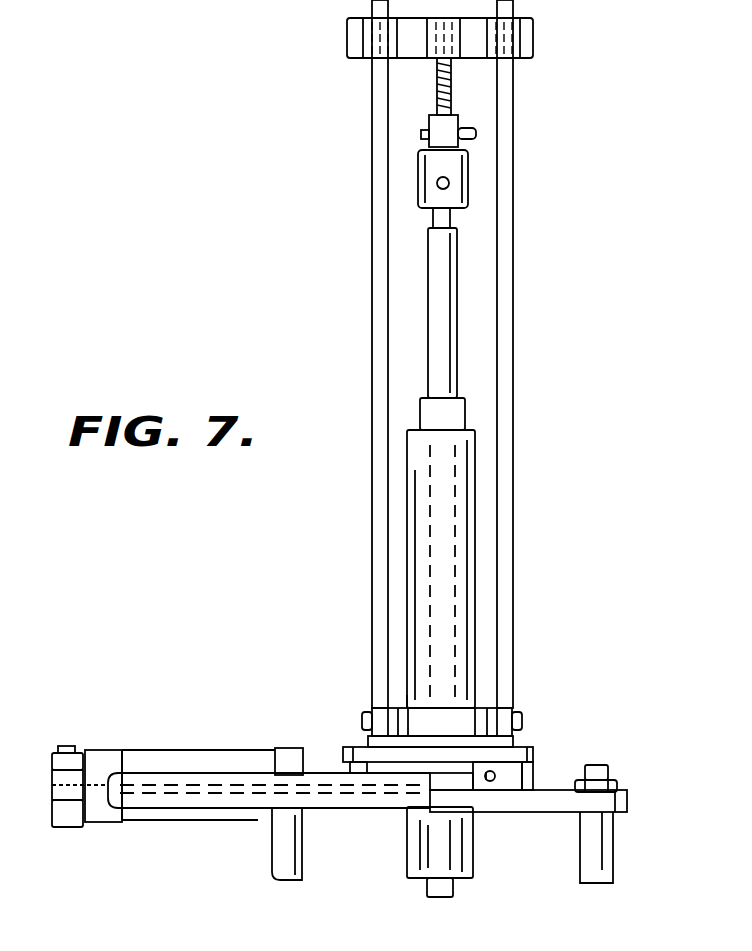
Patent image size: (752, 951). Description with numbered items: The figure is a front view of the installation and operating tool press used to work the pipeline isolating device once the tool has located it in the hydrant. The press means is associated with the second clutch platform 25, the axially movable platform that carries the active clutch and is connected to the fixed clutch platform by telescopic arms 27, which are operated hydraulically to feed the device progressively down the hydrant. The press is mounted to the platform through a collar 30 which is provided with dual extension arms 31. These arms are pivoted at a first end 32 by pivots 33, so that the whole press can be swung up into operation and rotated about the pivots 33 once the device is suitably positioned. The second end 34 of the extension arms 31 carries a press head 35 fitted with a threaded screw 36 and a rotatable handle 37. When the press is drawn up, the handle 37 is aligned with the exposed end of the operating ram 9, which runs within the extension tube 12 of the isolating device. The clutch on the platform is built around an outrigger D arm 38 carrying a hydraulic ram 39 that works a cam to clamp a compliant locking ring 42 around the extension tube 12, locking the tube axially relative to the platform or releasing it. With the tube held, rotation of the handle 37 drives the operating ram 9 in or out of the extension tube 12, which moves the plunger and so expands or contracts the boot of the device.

The operating ram 9 is at (452, 316).
The extension tube 12 is at (465, 540).
The second clutch platform 25 is at (565, 758).
The telescopic arms 27 is at (285, 842).
The collar 30 is at (433, 718).
The extension arms 31 is at (372, 322).
The first end 32 is at (404, 700).
The pivots 33 is at (363, 718).
The second end 34 is at (365, 67).
The press head 35 is at (538, 28).
The threaded screw 36 is at (452, 98).
The rotatable handle 37 is at (420, 134).
The outrigger D arm 38 is at (152, 785).
The hydraulic ram 39 is at (215, 762).
The compliant locking ring 42 is at (463, 775).